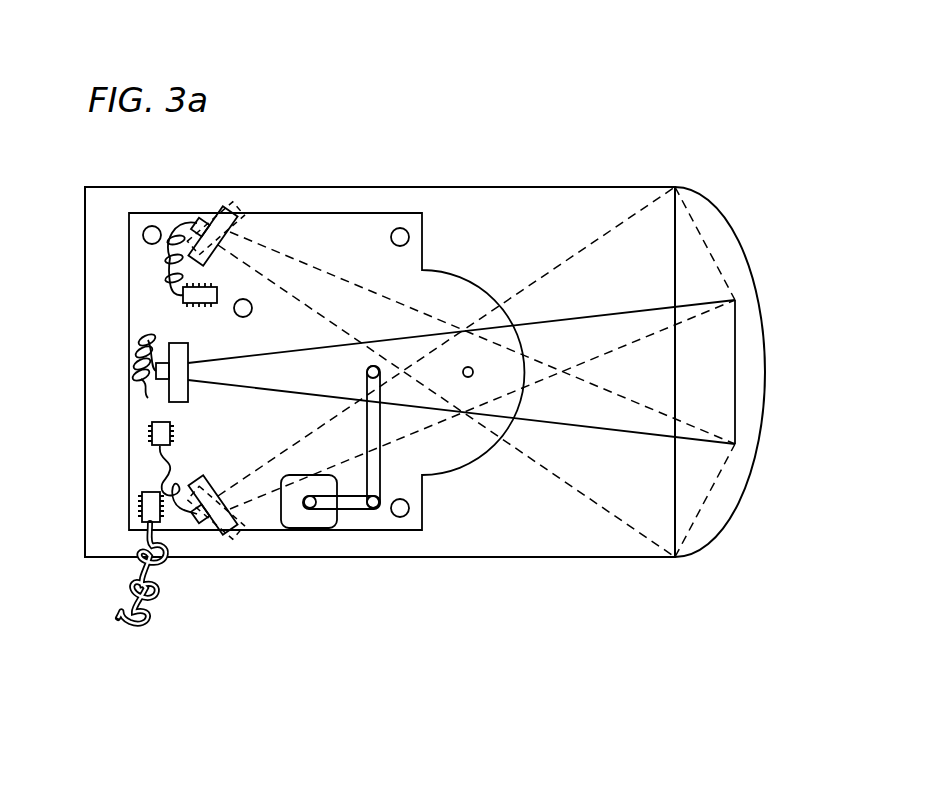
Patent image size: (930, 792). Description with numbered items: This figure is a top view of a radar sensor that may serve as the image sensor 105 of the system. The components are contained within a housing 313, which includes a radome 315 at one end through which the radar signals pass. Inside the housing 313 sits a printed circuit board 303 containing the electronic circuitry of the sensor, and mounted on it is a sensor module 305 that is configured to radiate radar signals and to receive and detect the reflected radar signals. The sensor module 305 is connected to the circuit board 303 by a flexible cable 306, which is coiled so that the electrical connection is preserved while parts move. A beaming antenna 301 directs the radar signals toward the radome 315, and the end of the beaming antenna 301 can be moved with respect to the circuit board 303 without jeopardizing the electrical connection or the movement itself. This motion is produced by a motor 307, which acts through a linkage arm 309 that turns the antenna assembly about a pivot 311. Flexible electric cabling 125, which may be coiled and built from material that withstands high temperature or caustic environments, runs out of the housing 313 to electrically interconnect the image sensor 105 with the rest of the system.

The image sensor 105 is at (632, 124).
The housing 313 is at (382, 187).
The radome 315 is at (744, 251).
The printed circuit board 303 is at (142, 292).
The sensor module 305 is at (180, 343).
The flexible cable 306 is at (134, 371).
The beaming antenna 301 is at (594, 315).
The pivot 311 is at (468, 367).
The linkage arm 309 is at (381, 462).
The motor 307 is at (281, 512).
The flexible electric cabling 125 is at (160, 580).